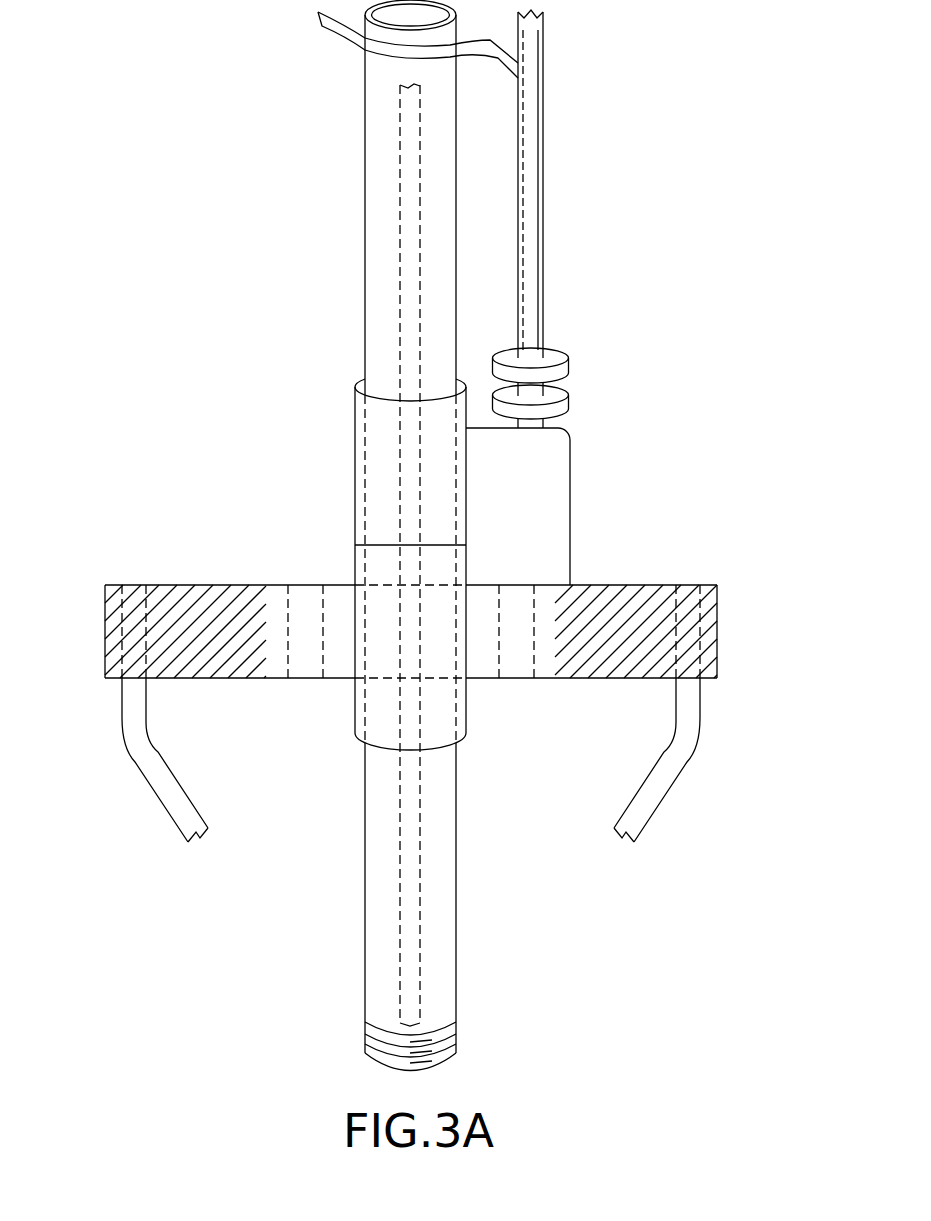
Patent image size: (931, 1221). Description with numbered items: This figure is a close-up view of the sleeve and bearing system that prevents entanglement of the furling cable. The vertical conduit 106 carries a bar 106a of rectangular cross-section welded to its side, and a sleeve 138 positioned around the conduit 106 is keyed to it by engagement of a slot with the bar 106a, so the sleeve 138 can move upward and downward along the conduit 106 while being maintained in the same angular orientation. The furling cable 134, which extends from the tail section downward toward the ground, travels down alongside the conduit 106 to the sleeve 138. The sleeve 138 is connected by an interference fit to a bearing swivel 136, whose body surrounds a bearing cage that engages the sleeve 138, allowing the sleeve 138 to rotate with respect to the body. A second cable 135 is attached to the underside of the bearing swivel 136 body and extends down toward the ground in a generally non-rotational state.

The conduit 106 is at (378, 260).
The bar 106a is at (400, 137).
The sleeve 138 is at (358, 393).
The cable 134 is at (535, 283).
The bearing swivel 136 is at (669, 582).
The second cable 135 is at (146, 753).